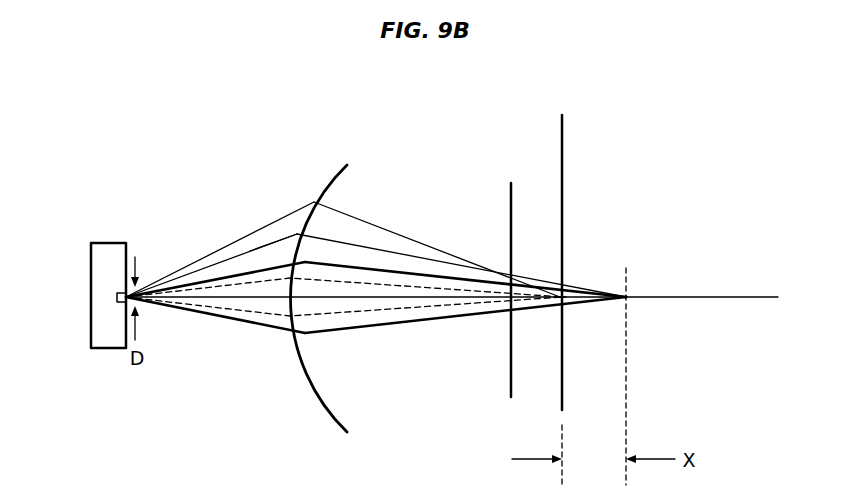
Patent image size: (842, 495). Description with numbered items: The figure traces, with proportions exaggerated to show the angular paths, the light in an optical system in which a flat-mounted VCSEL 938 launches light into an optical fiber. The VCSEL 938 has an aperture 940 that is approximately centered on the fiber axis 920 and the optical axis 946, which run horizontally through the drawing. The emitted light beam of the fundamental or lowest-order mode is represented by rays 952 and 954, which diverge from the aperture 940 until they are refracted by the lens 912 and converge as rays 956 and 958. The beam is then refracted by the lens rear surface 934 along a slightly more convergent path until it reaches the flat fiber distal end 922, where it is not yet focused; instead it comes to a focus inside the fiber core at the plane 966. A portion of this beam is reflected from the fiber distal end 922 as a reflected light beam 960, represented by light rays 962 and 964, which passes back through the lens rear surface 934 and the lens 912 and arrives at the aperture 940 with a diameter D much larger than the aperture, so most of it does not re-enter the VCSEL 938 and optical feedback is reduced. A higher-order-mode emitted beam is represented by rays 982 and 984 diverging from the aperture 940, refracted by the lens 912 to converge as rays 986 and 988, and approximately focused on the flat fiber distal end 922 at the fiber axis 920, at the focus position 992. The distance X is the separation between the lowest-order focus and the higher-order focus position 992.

The lens 912 is at (330, 177).
The fiber axis 920 is at (645, 305).
The flat fiber distal end 922 is at (553, 138).
The lens rear surface 934 is at (506, 368).
The VCSEL 938 is at (102, 265).
The aperture 940 is at (152, 266).
The optical axis 946 is at (718, 305).
The ray 952 is at (217, 265).
The ray 954 is at (193, 313).
The ray 956 is at (433, 272).
The ray 958 is at (458, 322).
The reflected light beam 960 is at (349, 316).
The light ray 962 is at (268, 315).
The light ray 964 is at (245, 291).
The plane 966 is at (628, 287).
The ray 982 is at (233, 242).
The ray 984 is at (283, 240).
The ray 986 is at (350, 245).
The ray 988 is at (412, 238).
The focus position 992 is at (567, 292).